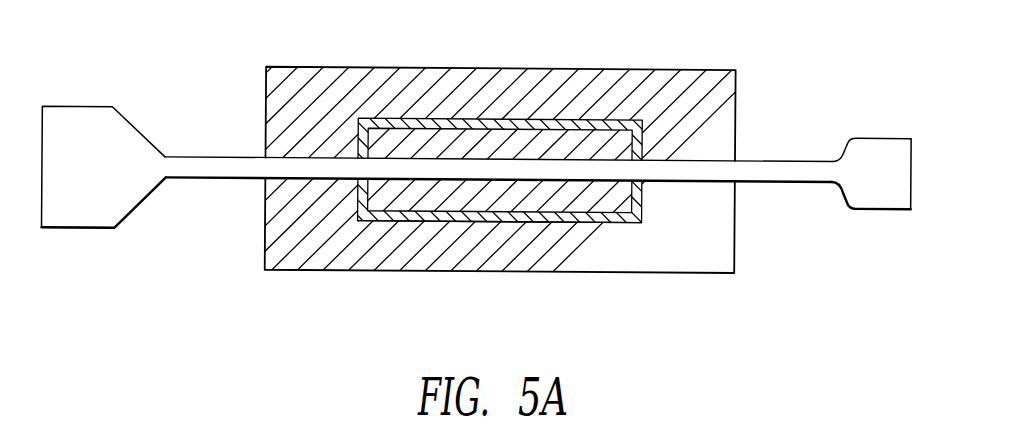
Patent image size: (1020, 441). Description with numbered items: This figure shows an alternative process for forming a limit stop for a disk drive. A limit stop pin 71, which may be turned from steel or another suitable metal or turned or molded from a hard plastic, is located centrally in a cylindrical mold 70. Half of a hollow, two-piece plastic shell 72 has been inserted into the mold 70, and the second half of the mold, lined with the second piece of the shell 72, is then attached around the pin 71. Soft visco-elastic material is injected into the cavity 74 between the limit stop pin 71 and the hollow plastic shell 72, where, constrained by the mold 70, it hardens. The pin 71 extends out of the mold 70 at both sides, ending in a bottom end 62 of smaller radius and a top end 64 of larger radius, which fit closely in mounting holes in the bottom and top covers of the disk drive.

The bottom end 62 is at (889, 137).
The top end 64 is at (77, 106).
The cylindrical mold 70 is at (480, 75).
The limit stop pin 71 is at (790, 161).
The hollow two-piece plastic shell 72 is at (585, 124).
The cavity 74 is at (583, 202).